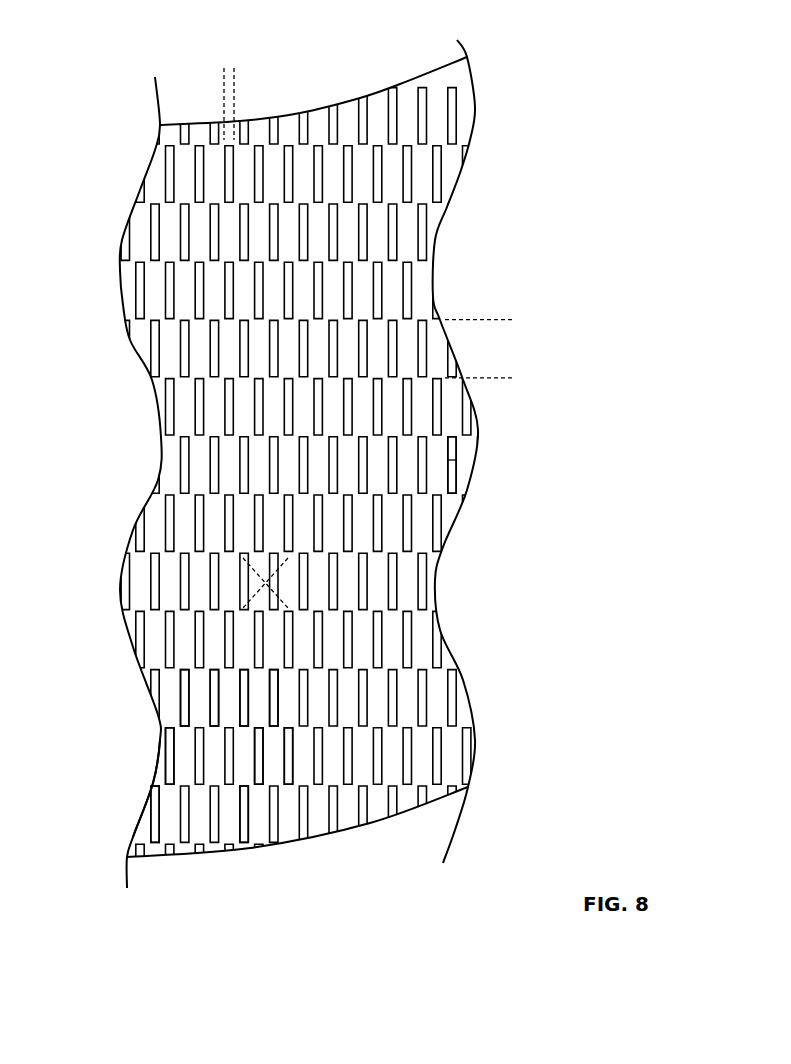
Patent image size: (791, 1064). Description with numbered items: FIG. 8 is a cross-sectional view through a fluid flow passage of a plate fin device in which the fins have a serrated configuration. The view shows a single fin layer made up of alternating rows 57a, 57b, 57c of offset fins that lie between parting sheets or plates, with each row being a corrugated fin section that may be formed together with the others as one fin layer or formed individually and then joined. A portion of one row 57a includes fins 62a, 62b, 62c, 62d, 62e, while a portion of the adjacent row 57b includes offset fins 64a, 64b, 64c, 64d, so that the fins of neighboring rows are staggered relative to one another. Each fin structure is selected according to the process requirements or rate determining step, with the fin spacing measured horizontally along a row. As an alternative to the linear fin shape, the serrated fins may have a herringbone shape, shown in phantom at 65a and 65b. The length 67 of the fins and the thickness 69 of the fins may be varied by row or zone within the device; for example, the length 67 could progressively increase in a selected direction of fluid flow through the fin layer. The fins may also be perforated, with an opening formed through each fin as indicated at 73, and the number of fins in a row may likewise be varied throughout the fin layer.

The row of offset fins 57a is at (160, 752).
The row of offset fins 57b is at (472, 702).
The row of offset fins 57c is at (125, 640).
The fin 62a is at (163, 770).
The fin 62b is at (157, 803).
The fin 62c is at (248, 778).
The fin 62d is at (262, 757).
The fin 62e is at (290, 765).
The offset fin 64a is at (180, 688).
The offset fin 64b is at (207, 708).
The offset fin 64c is at (248, 683).
The offset fin 64d is at (278, 705).
The herringbone-shaped fin 65a is at (260, 572).
The herringbone-shaped fin 65b is at (290, 588).
The fin length 67 is at (505, 378).
The fin thickness 69 is at (192, 57).
The perforation 73 is at (457, 463).